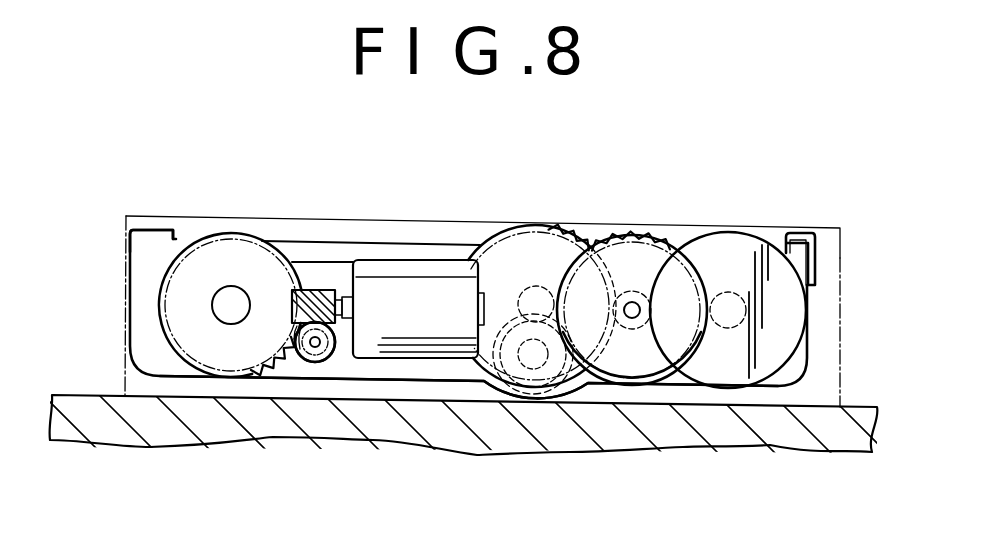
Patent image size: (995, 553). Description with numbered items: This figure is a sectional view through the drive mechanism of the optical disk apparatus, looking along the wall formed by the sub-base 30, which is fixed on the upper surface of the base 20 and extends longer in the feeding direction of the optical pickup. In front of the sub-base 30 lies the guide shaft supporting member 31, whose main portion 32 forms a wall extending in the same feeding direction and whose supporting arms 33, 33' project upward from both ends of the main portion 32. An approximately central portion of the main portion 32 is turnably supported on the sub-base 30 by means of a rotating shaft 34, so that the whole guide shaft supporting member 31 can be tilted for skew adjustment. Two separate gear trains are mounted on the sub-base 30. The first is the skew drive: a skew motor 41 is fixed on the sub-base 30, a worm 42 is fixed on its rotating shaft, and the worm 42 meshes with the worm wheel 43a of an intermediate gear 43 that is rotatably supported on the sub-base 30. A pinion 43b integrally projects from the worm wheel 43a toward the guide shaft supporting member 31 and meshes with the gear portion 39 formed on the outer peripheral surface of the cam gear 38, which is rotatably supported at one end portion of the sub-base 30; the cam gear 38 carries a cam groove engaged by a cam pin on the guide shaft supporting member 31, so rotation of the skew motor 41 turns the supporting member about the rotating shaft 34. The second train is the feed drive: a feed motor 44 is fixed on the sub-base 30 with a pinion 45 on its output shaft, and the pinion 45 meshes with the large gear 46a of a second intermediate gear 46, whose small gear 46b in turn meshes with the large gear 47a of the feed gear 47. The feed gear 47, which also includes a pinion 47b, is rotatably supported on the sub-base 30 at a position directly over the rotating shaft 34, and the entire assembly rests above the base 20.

The base 20 is at (853, 408).
The sub-base 30 is at (840, 317).
The guide shaft supporting member 31 is at (128, 323).
The main portion 32 is at (417, 372).
The supporting arm 33 is at (120, 238).
The supporting arm 33' is at (844, 259).
The rotating shaft 34 is at (548, 370).
The cam gear 38 is at (206, 258).
The gear portion 39 is at (253, 246).
The skew motor 41 is at (387, 267).
The worm 42 is at (314, 288).
The intermediate gear 43 is at (317, 361).
The worm wheel 43a is at (335, 360).
The pinion 43b is at (297, 360).
The feed motor 44 is at (740, 244).
The pinion 45 is at (728, 330).
The intermediate gear 46 is at (631, 234).
The large gear 46a is at (672, 386).
The small gear 46b is at (637, 297).
The feed gear 47 is at (549, 228).
The large gear 47a is at (510, 228).
The pinion 47b is at (495, 392).